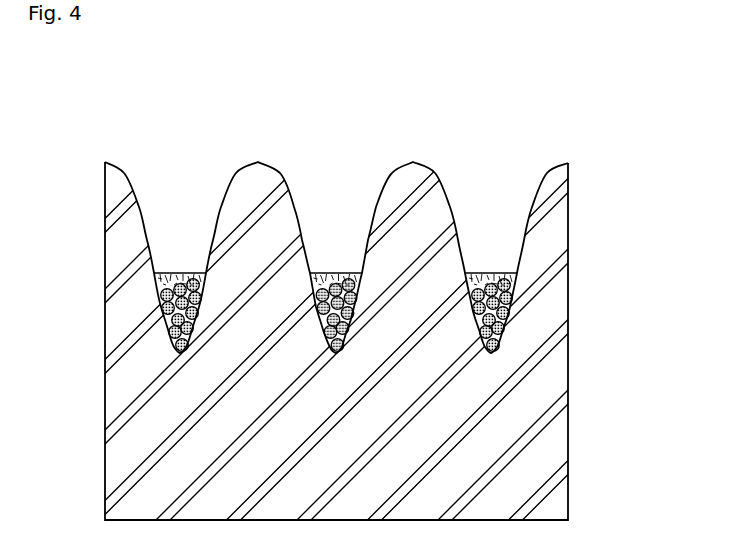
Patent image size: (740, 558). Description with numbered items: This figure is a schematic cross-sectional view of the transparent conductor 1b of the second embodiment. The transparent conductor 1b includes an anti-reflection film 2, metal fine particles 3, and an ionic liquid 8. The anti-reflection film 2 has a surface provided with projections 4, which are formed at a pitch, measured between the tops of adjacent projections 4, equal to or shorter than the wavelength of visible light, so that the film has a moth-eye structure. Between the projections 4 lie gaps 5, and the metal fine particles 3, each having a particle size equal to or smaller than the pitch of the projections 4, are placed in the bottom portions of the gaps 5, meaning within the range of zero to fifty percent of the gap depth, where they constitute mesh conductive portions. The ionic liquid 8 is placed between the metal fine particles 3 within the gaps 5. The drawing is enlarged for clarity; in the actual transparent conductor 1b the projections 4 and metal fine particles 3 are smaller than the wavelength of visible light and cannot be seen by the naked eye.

The transparent conductor 1b is at (63, 125).
The anti-reflection film 2 is at (370, 308).
The metal fine particles 3 is at (513, 314).
The projections 4 is at (410, 225).
The gaps 5 is at (493, 224).
The ionic liquid 8 is at (519, 280).